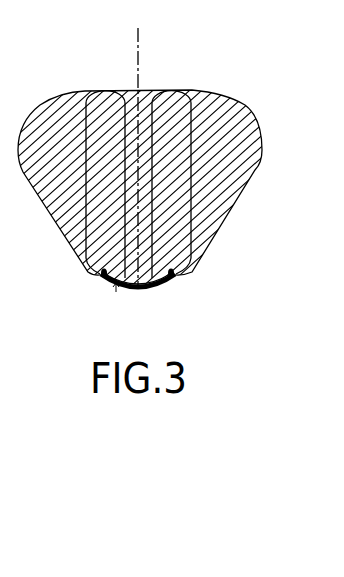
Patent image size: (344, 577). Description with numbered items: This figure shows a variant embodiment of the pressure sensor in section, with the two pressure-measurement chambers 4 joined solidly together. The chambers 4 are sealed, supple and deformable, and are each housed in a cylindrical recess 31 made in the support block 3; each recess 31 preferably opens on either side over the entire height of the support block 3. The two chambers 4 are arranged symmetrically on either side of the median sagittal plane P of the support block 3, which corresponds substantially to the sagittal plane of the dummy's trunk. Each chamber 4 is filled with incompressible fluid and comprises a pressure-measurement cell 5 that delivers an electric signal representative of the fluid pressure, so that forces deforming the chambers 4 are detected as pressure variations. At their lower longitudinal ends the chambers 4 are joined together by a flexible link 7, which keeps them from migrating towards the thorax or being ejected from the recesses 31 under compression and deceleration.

The support block 3 is at (230, 108).
The cylindrical recess 31 is at (92, 90).
The pressure-measurement chamber 4 is at (110, 99).
The pressure-measurement cell 5 is at (100, 274).
The flexible link 7 is at (141, 291).
The median sagittal plane P is at (140, 37).